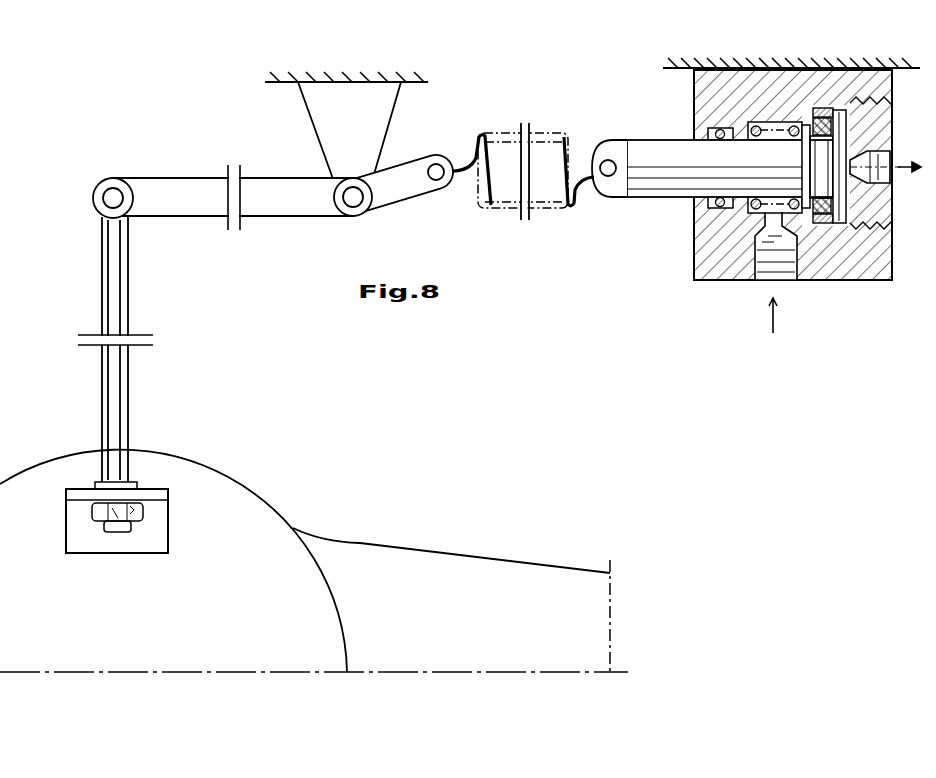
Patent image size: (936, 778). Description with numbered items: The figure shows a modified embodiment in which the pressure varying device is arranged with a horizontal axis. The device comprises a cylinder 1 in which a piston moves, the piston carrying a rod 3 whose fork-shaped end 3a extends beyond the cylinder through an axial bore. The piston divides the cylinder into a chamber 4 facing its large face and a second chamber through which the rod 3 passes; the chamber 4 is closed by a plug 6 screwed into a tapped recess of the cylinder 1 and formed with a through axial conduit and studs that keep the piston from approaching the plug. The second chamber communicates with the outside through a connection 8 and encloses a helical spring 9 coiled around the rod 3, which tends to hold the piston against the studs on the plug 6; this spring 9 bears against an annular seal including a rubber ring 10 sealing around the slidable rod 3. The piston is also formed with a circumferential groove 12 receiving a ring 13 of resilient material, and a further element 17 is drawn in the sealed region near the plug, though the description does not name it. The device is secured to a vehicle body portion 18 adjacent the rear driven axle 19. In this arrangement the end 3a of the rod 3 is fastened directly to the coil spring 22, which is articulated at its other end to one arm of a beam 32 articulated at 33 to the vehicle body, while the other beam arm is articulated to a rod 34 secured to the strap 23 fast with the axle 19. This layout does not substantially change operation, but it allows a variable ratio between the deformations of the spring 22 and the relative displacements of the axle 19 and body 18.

The cylinder 1 is at (700, 237).
The rod 3 is at (698, 152).
The end of the rod 3a is at (620, 143).
The chamber 4 is at (843, 110).
The plug 6 is at (882, 126).
The connection 8 is at (783, 266).
The helical spring 9 is at (797, 127).
The rubber ring 10 is at (722, 128).
The circumferential groove 12 is at (822, 157).
The ring 13 is at (806, 138).
The sealing element 17 is at (823, 108).
The vehicle body portion 18 is at (791, 58).
The rear driven axle 19 is at (358, 557).
The coil spring 22 is at (557, 210).
The strap 23 is at (163, 467).
The beam 32 is at (382, 202).
The articulation 33 is at (348, 202).
The rod 34 is at (115, 306).